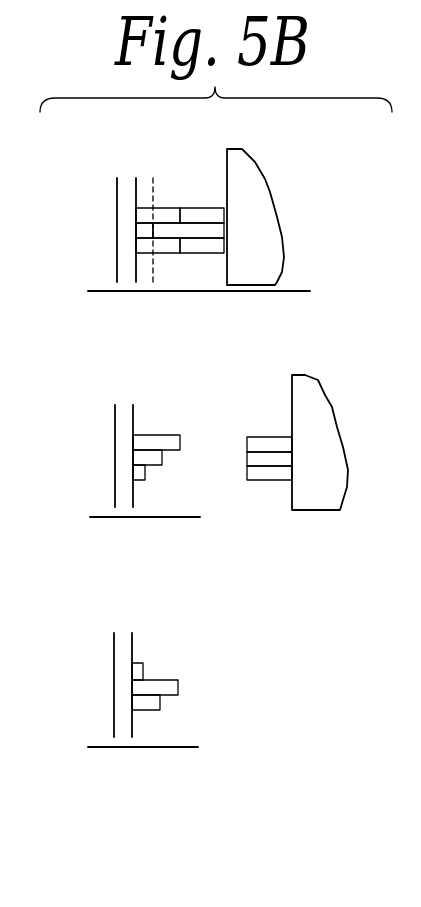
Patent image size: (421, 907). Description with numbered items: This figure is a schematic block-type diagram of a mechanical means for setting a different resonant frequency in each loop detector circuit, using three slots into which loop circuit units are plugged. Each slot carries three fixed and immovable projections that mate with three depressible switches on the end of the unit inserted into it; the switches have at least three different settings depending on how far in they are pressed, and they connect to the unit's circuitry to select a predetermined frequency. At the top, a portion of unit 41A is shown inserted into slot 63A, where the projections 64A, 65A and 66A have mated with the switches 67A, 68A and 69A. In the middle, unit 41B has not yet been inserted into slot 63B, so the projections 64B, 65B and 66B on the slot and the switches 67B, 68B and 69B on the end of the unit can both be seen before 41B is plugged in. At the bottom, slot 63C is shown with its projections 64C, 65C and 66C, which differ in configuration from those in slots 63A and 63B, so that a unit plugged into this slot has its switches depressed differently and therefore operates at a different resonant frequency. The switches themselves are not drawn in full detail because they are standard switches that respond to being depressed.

The loop circuit unit 41A is at (262, 173).
The slot 63A is at (112, 265).
The projection 64A is at (148, 221).
The projection 65A is at (150, 231).
The projection 66A is at (172, 254).
The switch 67A is at (197, 217).
The switch 68A is at (218, 230).
The switch 69A is at (210, 254).
The loop circuit unit 41B is at (310, 374).
The slot 63B is at (85, 500).
The projection 64B is at (160, 434).
The projection 65B is at (162, 461).
The projection 66B is at (141, 480).
The switch 67B is at (270, 436).
The switch 68B is at (283, 460).
The switch 69B is at (262, 481).
The slot 63C is at (97, 705).
The projection 64C is at (140, 663).
The projection 65C is at (178, 688).
The projection 66C is at (140, 710).